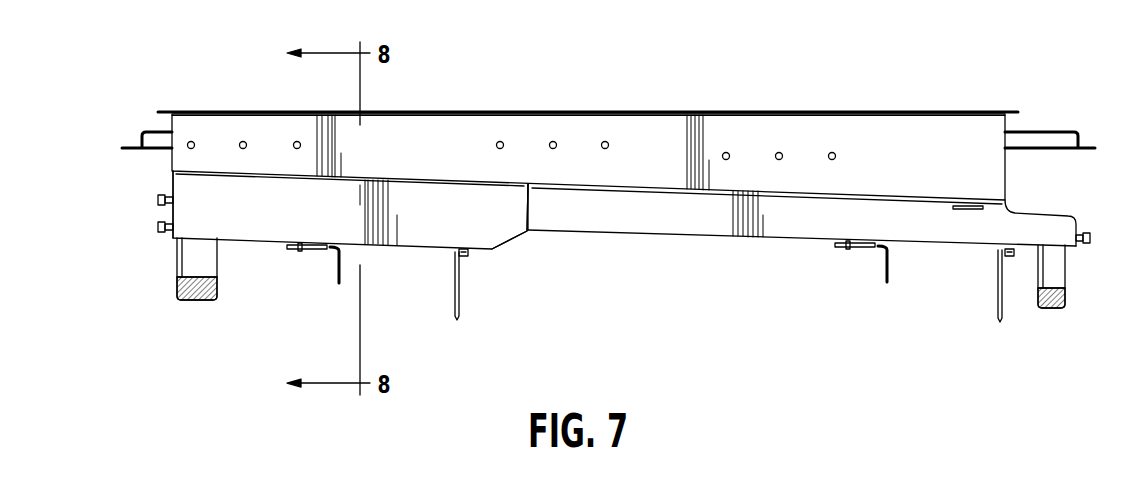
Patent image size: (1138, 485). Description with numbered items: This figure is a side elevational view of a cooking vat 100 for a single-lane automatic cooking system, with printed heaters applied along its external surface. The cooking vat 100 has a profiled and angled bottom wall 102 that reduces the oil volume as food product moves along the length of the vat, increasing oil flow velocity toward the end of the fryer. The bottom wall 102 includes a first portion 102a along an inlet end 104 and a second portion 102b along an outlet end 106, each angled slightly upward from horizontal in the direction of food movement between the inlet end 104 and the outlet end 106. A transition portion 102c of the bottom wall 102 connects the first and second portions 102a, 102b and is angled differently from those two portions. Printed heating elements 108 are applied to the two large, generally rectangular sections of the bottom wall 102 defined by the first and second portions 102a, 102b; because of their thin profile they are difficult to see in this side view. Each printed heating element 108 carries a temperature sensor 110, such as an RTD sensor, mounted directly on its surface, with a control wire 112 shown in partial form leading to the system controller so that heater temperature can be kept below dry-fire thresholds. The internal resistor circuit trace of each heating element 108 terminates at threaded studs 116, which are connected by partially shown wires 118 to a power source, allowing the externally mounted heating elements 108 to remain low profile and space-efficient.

The cooking vat 100 is at (887, 108).
The bottom wall 102 is at (685, 240).
The first portion 102a is at (757, 238).
The second portion 102b is at (402, 249).
The transition portion 102c is at (512, 238).
The inlet end 104 is at (1040, 214).
The outlet end 106 is at (172, 180).
The printed heating elements 108 is at (561, 212).
The temperature sensor 110 is at (305, 252).
The control wire 112 is at (335, 268).
The threaded studs 116 is at (468, 257).
The wires 118 is at (460, 305).